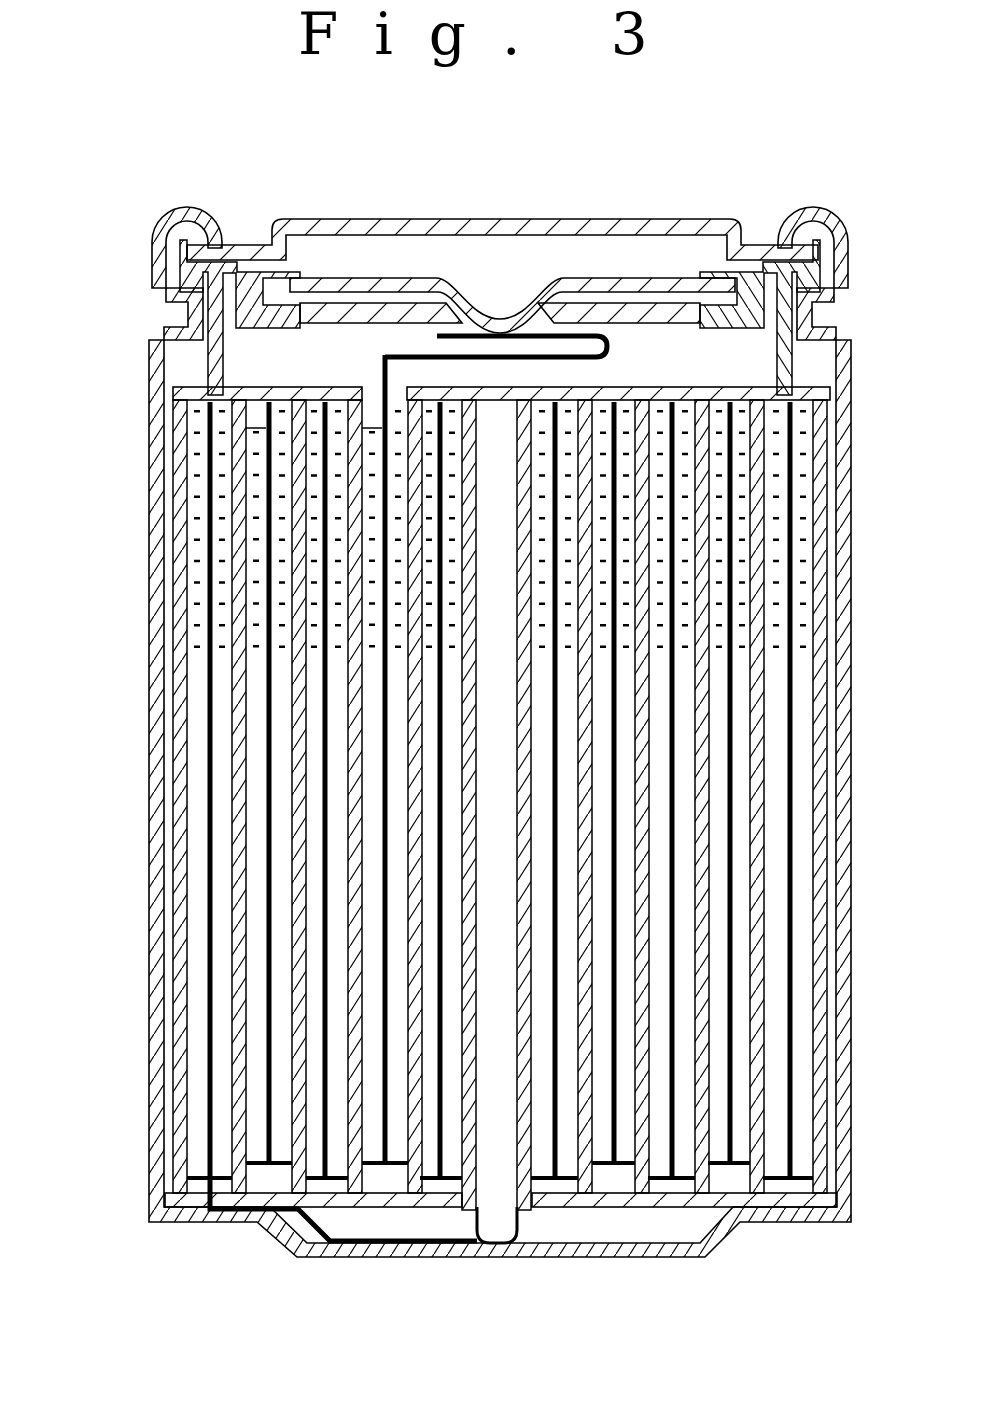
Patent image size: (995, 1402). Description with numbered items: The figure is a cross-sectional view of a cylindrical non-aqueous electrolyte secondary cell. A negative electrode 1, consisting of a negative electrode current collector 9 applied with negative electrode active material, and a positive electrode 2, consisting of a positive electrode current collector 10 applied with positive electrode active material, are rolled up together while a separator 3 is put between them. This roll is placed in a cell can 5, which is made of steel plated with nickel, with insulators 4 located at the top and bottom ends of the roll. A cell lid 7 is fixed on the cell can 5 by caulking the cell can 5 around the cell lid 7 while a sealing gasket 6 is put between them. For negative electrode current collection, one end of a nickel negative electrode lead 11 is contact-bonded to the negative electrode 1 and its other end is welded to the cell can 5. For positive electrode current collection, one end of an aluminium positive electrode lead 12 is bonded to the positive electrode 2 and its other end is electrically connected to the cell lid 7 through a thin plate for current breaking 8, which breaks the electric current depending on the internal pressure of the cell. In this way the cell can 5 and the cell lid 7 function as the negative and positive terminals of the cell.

The negative electrode 1 is at (190, 822).
The positive electrode 2 is at (255, 661).
The separator 3 is at (185, 568).
The insulator 4 is at (680, 392).
The cell can 5 is at (157, 490).
The sealing gasket 6 is at (160, 247).
The cell lid 7 is at (527, 222).
The thin plate for current breaking 8 is at (545, 276).
The negative electrode current collector 9 is at (210, 905).
The positive electrode current collector 10 is at (265, 726).
The negative electrode lead 11 is at (280, 1240).
The positive electrode lead 12 is at (590, 322).